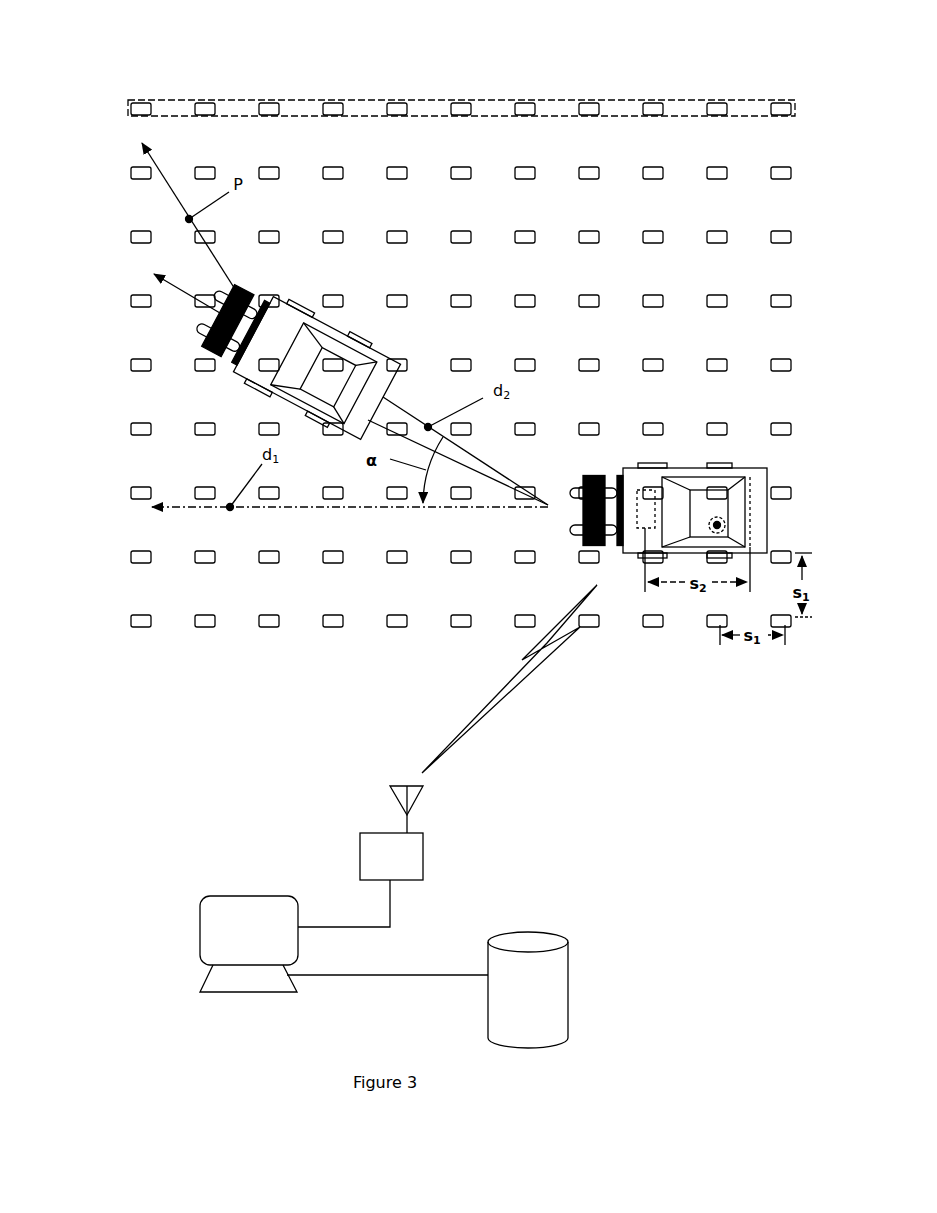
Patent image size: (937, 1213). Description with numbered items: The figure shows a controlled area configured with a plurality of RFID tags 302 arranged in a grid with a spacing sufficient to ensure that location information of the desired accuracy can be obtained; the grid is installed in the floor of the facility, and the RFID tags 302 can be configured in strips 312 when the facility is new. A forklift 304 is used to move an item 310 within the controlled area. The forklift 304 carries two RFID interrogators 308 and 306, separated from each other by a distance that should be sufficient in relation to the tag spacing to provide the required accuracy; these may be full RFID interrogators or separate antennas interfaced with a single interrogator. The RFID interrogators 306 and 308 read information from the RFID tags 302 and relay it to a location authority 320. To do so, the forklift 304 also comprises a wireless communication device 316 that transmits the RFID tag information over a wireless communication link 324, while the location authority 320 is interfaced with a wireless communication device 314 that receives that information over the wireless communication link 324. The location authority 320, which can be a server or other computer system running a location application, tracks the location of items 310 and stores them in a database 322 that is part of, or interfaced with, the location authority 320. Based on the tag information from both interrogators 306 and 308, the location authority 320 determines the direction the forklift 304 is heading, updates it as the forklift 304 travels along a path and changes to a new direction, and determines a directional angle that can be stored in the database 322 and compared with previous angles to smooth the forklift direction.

The RFID tags 302 is at (141, 90).
The forklift 304 is at (338, 329).
The RFID interrogator 306 is at (751, 490).
The RFID interrogator 308 is at (648, 496).
The item 310 is at (243, 300).
The strips 312 is at (430, 119).
The wireless communication device 314 is at (423, 833).
The wireless communication device 316 is at (721, 526).
The location authority 320 is at (568, 995).
The database 322 is at (201, 913).
The wireless communication link 324 is at (547, 643).